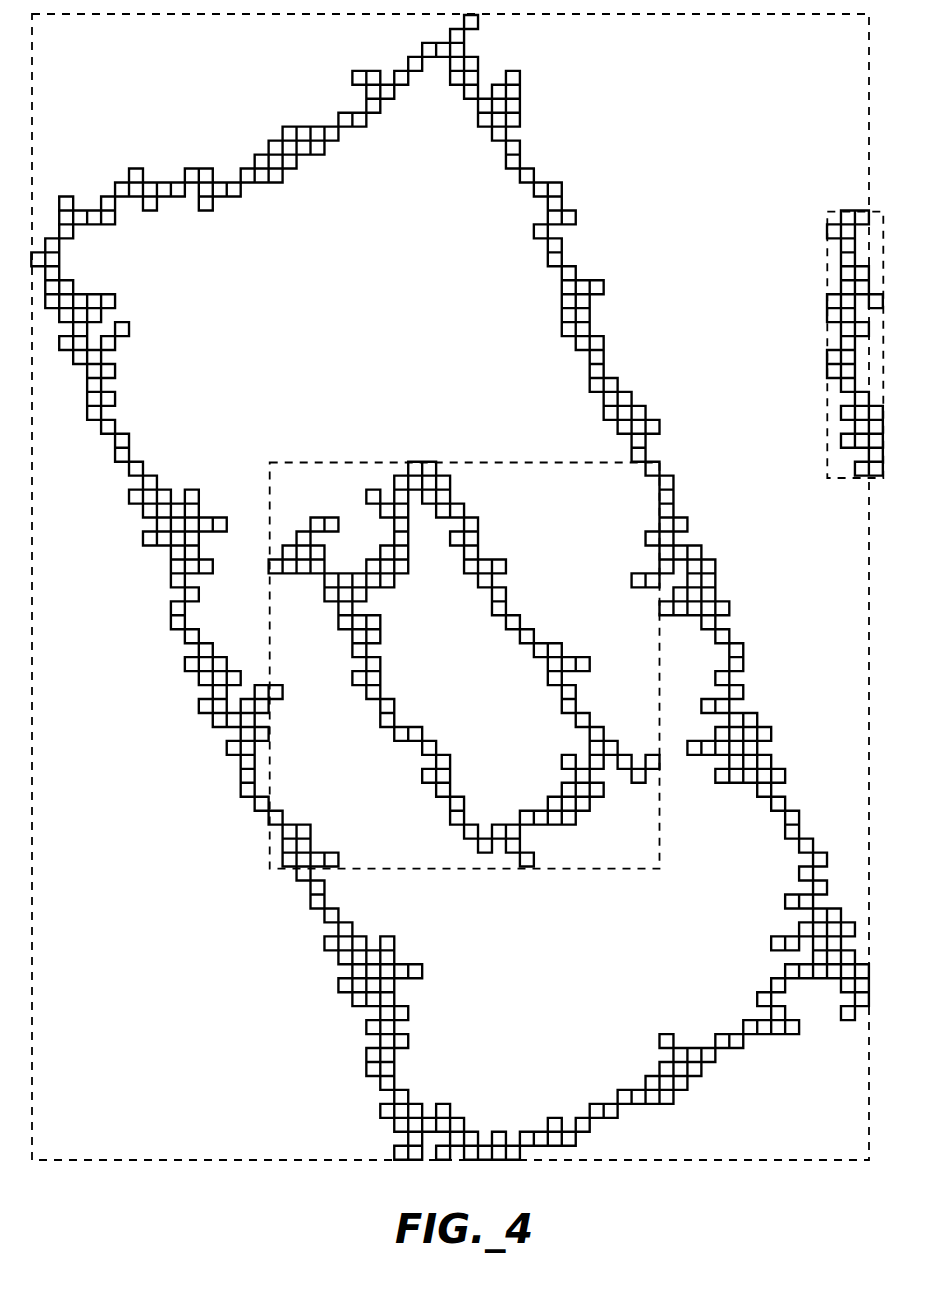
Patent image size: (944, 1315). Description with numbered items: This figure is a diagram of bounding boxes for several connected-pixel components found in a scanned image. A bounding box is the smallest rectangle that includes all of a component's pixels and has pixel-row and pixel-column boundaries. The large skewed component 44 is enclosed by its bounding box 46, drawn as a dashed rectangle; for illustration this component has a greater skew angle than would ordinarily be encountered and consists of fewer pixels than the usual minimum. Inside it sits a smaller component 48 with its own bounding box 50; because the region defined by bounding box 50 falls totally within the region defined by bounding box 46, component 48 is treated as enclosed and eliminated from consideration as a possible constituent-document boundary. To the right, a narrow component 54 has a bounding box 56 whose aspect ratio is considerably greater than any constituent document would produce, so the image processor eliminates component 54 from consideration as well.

The component 44 is at (116, 211).
The bounding box 46 is at (81, 15).
The component 48 is at (381, 630).
The bounding box 50 is at (318, 462).
The component 54 is at (844, 366).
The bounding box 56 is at (831, 211).